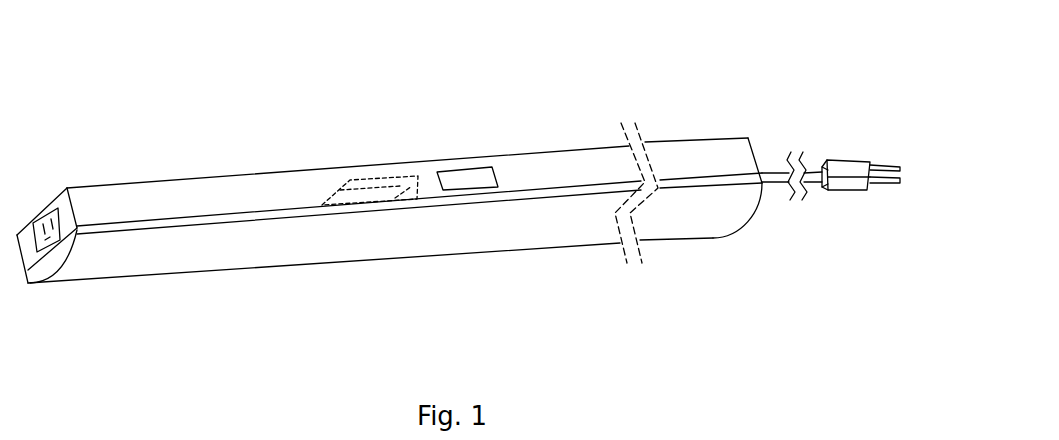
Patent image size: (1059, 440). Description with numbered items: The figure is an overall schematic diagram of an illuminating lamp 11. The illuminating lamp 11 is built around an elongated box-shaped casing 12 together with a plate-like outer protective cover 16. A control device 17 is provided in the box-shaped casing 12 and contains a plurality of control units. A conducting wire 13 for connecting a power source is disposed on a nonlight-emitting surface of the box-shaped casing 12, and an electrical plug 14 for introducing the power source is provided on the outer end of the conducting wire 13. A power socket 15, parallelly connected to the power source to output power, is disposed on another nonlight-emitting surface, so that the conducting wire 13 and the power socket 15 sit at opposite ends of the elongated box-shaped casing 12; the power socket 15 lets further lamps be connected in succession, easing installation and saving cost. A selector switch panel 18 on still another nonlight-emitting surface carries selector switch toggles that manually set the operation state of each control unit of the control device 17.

The illuminating lamp 11 is at (298, 133).
The box-shaped casing 12 is at (176, 195).
The conducting wire 13 is at (780, 178).
The electrical plug 14 is at (852, 172).
The power socket 15 is at (47, 208).
The outer protective cover 16 is at (188, 225).
The control device 17 is at (360, 193).
The selector switch panel 18 is at (470, 180).